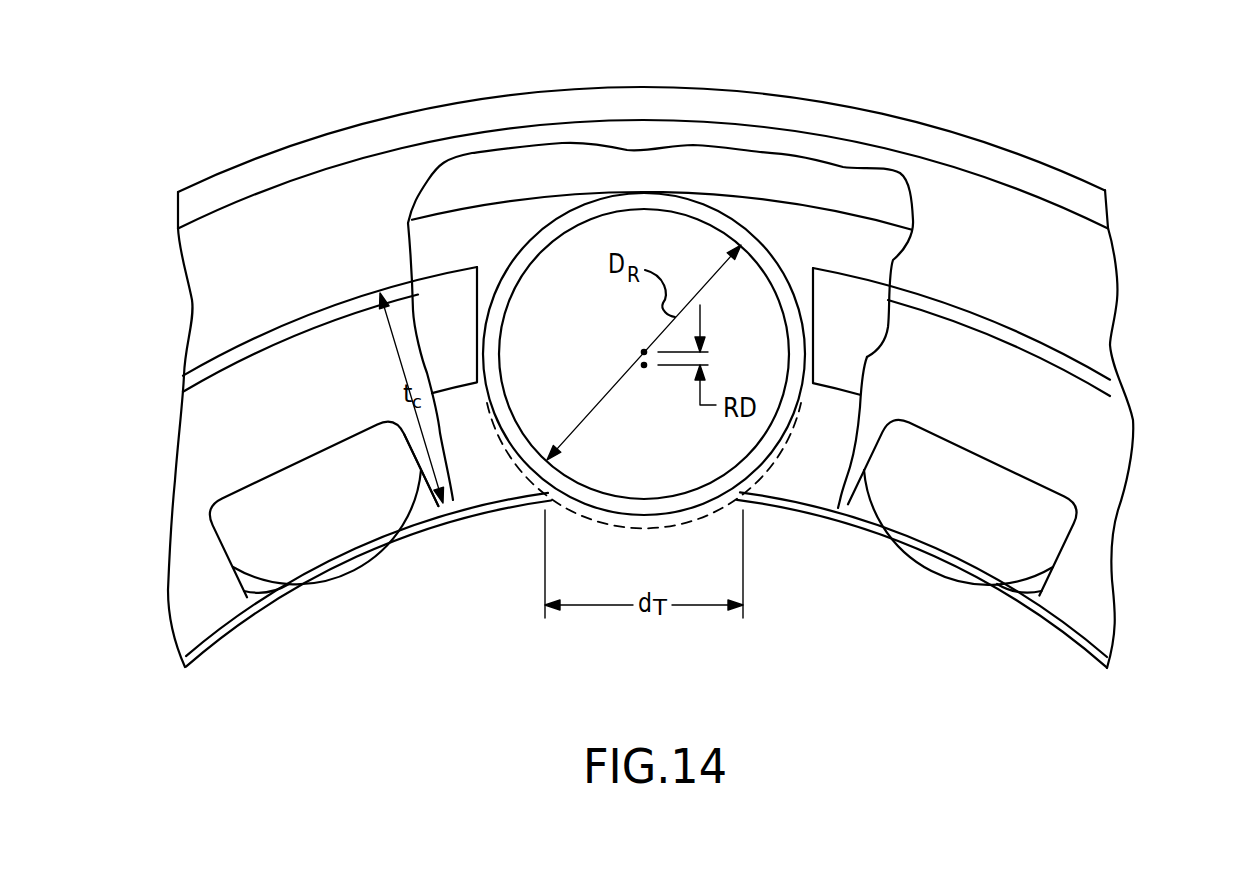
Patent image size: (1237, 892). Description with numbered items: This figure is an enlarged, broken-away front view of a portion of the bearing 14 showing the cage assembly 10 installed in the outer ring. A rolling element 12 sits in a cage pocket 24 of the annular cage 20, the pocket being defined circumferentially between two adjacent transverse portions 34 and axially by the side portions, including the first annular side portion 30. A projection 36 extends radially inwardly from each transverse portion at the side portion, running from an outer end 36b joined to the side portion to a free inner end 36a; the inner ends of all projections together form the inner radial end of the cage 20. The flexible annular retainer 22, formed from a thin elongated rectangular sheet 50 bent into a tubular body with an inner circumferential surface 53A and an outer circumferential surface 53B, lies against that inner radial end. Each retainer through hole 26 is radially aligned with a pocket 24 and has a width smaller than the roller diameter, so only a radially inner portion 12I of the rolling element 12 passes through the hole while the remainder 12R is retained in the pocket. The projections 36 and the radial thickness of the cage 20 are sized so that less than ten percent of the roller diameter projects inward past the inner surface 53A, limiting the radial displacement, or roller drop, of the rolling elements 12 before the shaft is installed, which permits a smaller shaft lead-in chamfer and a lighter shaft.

The cage assembly 10 is at (1168, 517).
The rolling element 12 is at (533, 213).
The remainder of the rolling element 12R is at (273, 500).
The radially inner portion of the rolling element 12I is at (365, 560).
The bearing 14 is at (1095, 136).
The annular cage 20 is at (1096, 337).
The annular retainer 22 is at (268, 645).
The cage pocket 24 is at (802, 278).
The retainer through hole 26 is at (562, 524).
The first annular side portion 30 is at (1110, 435).
The transverse portion 34 is at (442, 297).
The projection 36 is at (207, 645).
The free inner end of projection 36a is at (843, 503).
The outer end of projection 36b is at (880, 418).
The elongated rectangular sheet 50 is at (338, 594).
The inner circumferential surface 53A is at (423, 528).
The outer circumferential surface 53B is at (357, 547).